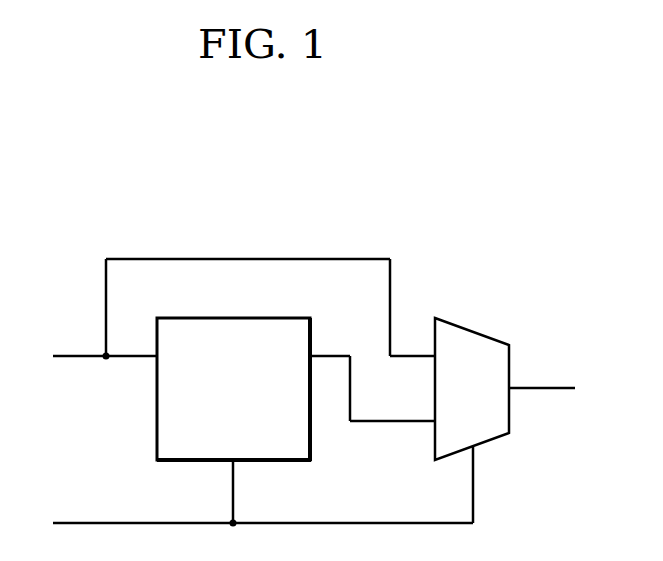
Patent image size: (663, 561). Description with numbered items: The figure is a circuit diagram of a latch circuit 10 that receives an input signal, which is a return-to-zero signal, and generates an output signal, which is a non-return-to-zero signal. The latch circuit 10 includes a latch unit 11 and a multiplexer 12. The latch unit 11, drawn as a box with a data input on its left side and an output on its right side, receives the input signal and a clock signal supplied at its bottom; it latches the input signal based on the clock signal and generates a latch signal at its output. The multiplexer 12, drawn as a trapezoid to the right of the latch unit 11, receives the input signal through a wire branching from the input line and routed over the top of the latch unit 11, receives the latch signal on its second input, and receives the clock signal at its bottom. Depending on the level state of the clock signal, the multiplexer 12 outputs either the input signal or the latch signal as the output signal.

The latch circuit 10 is at (500, 212).
The latch unit 11 is at (240, 318).
The multiplexer 12 is at (470, 331).